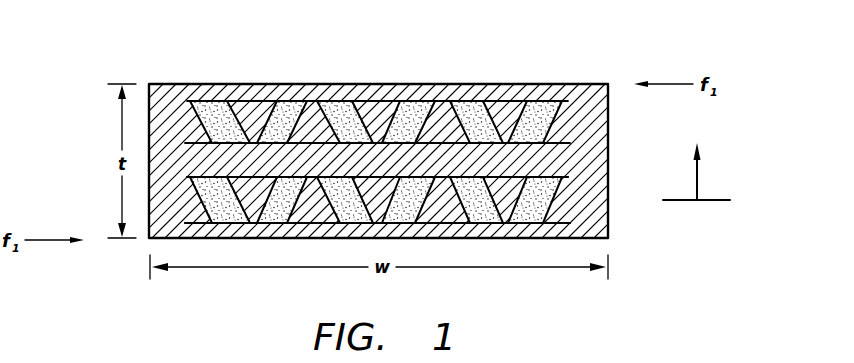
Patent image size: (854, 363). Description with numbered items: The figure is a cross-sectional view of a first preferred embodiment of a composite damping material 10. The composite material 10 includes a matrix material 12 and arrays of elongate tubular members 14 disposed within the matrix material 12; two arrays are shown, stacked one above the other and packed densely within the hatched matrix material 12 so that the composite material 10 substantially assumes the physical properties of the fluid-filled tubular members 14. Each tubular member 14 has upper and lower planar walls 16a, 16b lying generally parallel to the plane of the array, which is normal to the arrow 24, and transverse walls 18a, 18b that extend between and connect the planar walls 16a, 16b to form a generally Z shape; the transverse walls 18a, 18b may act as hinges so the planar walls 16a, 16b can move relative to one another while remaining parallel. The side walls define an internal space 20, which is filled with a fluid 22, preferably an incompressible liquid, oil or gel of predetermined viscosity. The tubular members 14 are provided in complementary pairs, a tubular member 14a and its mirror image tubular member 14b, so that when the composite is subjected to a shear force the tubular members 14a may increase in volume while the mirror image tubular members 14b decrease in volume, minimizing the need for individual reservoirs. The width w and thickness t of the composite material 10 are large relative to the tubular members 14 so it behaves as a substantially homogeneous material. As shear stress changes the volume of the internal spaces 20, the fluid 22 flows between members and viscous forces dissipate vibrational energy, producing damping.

The composite damping material 10 is at (599, 68).
The matrix material 12 is at (597, 127).
The elongate tubular members 14 is at (490, 236).
The tubular member 14a is at (322, 224).
The mirror image tubular member 14b is at (203, 203).
The upper planar wall 16a is at (442, 143).
The lower planar wall 16b is at (392, 147).
The transverse wall 18a is at (263, 122).
The transverse wall 18b is at (298, 123).
The internal space 20 is at (337, 108).
The fluid 22 is at (230, 205).
The arrow 24 is at (699, 178).